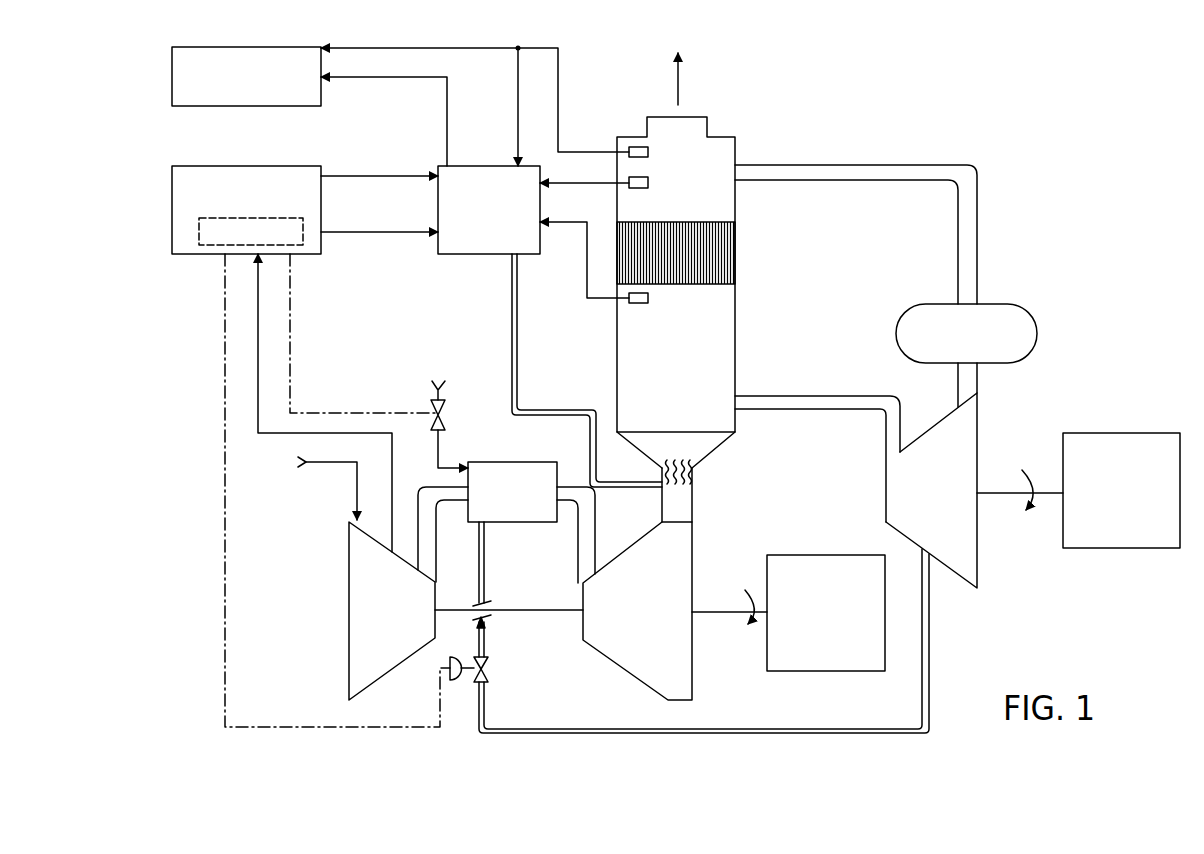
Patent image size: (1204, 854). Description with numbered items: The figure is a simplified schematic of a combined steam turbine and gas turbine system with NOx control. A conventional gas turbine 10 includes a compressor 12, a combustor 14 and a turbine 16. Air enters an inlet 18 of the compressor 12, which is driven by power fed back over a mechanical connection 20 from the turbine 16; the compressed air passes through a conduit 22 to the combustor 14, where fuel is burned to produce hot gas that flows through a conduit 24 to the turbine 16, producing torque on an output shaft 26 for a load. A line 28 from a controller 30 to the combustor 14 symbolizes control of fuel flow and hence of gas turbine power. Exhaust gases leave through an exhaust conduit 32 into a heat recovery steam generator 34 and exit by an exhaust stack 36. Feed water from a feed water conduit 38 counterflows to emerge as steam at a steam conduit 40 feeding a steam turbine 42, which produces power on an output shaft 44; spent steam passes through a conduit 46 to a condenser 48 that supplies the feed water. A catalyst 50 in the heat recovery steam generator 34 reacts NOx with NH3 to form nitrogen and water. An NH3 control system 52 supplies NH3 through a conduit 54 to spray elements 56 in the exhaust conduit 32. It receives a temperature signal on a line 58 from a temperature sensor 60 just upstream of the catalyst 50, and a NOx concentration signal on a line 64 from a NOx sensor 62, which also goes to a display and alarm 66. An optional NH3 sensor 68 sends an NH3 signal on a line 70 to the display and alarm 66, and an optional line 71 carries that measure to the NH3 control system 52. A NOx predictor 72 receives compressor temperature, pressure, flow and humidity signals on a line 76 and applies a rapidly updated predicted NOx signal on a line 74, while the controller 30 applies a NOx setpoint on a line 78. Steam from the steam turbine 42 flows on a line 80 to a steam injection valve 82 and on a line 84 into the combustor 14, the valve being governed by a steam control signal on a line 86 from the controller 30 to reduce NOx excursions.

The gas turbine 10 is at (537, 580).
The compressor 12 is at (397, 620).
The combustor 14 is at (522, 503).
The turbine 16 is at (650, 618).
The inlet 18 is at (350, 516).
The mechanical connection 20 is at (498, 613).
The conduit 22 is at (417, 498).
The conduit 24 is at (598, 518).
The output shaft 26 is at (717, 613).
The line 28 is at (290, 329).
The controller 30 is at (172, 215).
The exhaust conduit 32 is at (693, 507).
The heat recovery steam generator 34 is at (695, 383).
The exhaust stack 36 is at (708, 120).
The feed water conduit 38 is at (823, 165).
The steam conduit 40 is at (788, 398).
The steam turbine 42 is at (950, 509).
The output shaft 44 is at (1002, 487).
The conduit 46 is at (973, 397).
The condenser 48 is at (985, 349).
The catalyst 50 is at (735, 263).
The NH3 control system 52 is at (530, 186).
The conduit 54 is at (590, 430).
The spray elements 56 is at (692, 470).
The line 58 is at (568, 227).
The temperature sensor 60 is at (648, 298).
The NOx sensor 62 is at (648, 183).
The line 64 is at (448, 125).
The display and alarm 66 is at (298, 98).
The NH3 sensor 68 is at (648, 152).
The line 70 is at (353, 47).
The optional line 71 is at (517, 100).
The NOx predictor 72 is at (274, 218).
The line 74 is at (358, 228).
The line 76 is at (262, 350).
The line 78 is at (358, 176).
The line 80 is at (737, 727).
The steam injection valve 82 is at (494, 668).
The line 84 is at (483, 557).
The line 86 is at (222, 585).